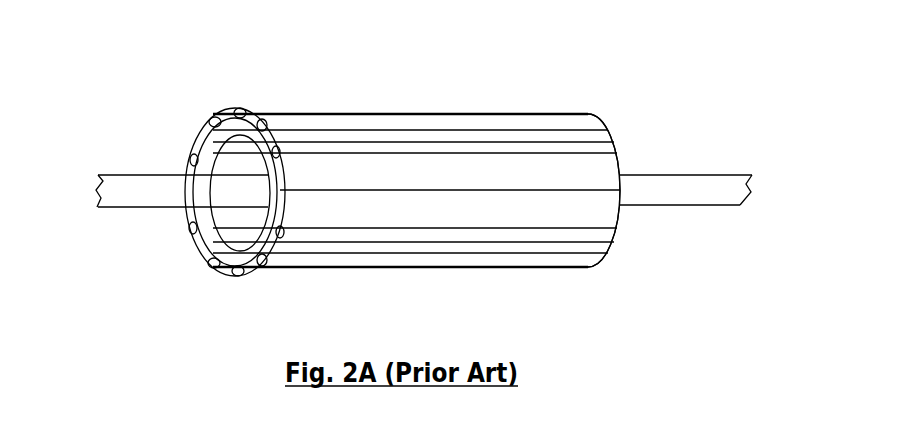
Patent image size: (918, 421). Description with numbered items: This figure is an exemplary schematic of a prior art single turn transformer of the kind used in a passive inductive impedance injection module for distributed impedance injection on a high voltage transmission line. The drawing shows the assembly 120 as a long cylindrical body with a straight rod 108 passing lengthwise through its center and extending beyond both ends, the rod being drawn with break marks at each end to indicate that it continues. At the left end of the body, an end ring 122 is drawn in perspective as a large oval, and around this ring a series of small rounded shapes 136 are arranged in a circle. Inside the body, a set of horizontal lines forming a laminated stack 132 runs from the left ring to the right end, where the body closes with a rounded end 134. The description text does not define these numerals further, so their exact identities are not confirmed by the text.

The electric motor stator assembly 120 is at (365, 80).
The end ring 122 is at (188, 147).
The windings 136 is at (188, 233).
The stator core / laminations 132 is at (354, 193).
The housing end cap 134 is at (588, 117).
The shaft 108 is at (680, 207).